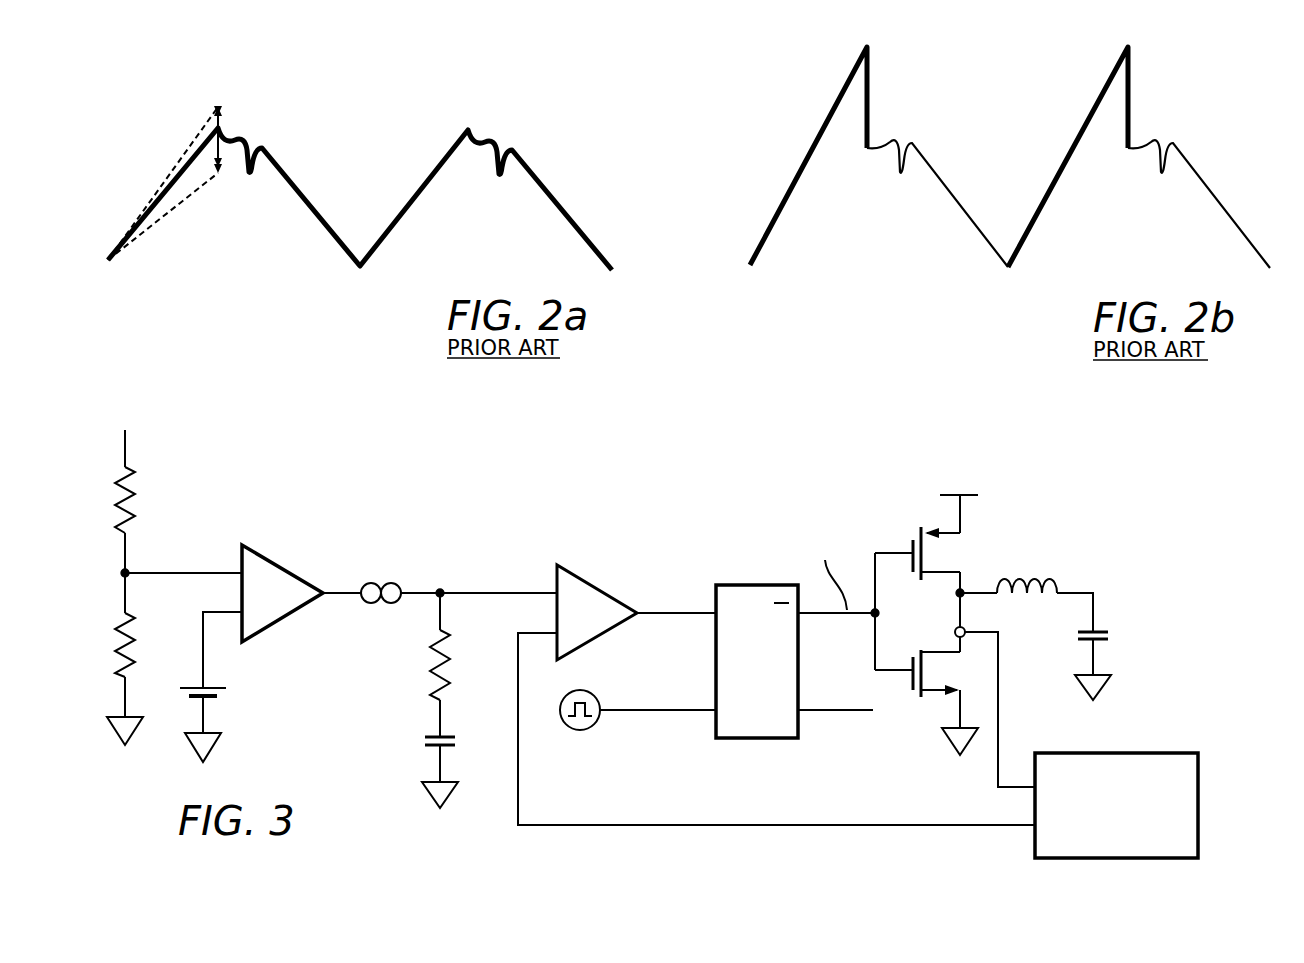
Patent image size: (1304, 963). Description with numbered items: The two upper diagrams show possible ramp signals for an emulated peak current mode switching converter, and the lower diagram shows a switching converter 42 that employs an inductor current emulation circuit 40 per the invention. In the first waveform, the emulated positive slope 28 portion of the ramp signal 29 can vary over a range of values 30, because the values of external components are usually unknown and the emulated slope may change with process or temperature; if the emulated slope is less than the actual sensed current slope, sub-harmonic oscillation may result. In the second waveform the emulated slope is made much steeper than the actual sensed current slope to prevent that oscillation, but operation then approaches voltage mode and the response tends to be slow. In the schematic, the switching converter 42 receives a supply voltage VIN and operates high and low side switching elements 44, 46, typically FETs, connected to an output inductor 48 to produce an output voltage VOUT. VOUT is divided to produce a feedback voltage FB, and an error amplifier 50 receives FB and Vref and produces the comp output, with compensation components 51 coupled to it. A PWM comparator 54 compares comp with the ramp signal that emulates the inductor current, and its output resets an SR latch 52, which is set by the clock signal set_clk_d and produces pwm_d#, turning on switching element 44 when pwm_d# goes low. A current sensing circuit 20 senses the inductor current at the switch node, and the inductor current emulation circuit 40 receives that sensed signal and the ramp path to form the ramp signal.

In FIG. 2A, the emulated positive slope 28 is at (158, 203).
In FIG. 2B, the emulated positive slope 28 is at (787, 205).
In FIG. 2A, the ramp signal 29 is at (562, 110).
In FIG. 2B, the ramp signal 29 is at (1206, 113).
In FIG. 2A, the range of values 30 is at (220, 127).
In FIG. 3, the inductor current emulation circuit 40 is at (1162, 753).
In FIG. 3, the switching converter 42 is at (1165, 532).
In FIG. 3, the high side switching element 44 is at (978, 552).
In FIG. 3, the low side switching element 46 is at (976, 672).
In FIG. 3, the output inductor 48 is at (1042, 578).
In FIG. 3, the error amplifier 50 is at (275, 622).
In FIG. 3, the compensation components 51 is at (406, 680).
In FIG. 3, the SR latch 52 is at (755, 585).
In FIG. 3, the PWM comparator 54 is at (600, 638).
In FIG. 3, the current sensing circuit 20 is at (956, 626).